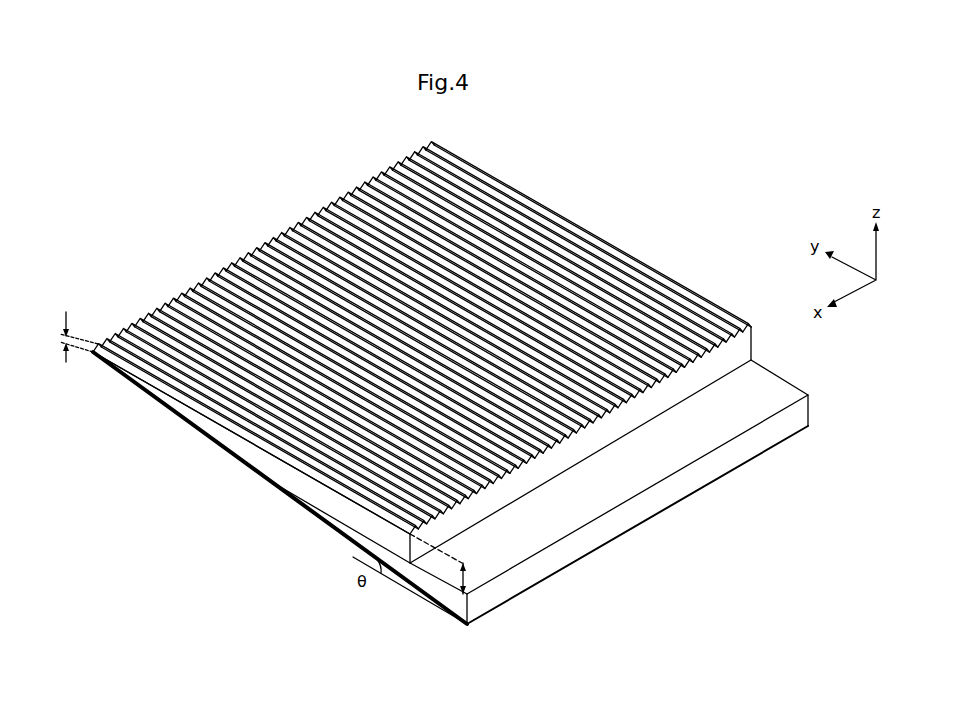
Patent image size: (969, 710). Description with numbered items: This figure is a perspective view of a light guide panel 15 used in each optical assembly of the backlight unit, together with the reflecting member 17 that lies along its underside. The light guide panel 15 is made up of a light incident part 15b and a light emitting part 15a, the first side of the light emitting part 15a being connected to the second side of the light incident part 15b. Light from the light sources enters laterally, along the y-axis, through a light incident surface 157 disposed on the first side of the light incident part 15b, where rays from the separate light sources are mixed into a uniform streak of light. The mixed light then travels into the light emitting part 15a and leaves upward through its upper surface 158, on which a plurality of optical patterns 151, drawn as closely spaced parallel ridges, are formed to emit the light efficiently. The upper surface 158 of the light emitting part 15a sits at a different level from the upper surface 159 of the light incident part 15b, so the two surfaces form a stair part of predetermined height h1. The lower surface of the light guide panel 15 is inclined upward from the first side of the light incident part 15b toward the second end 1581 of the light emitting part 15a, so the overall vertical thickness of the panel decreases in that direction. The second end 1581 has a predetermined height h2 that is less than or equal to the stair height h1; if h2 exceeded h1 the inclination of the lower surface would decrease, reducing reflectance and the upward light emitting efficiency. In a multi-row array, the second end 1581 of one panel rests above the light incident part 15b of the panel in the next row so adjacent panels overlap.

The light guide panel 15 is at (446, 412).
The light emitting part 15a is at (417, 374).
The light incident part 15b is at (575, 518).
The optical patterns 151 is at (262, 440).
The upper surface of the light emitting part 158 is at (417, 359).
The second end of the light emitting part 1581 is at (93, 346).
The reflecting member 17 is at (259, 475).
The light incident surface 157 is at (593, 540).
The upper surface of the light incident part 159 is at (500, 553).
The height of the stair part h1 is at (475, 578).
The height of the second end h2 is at (67, 337).